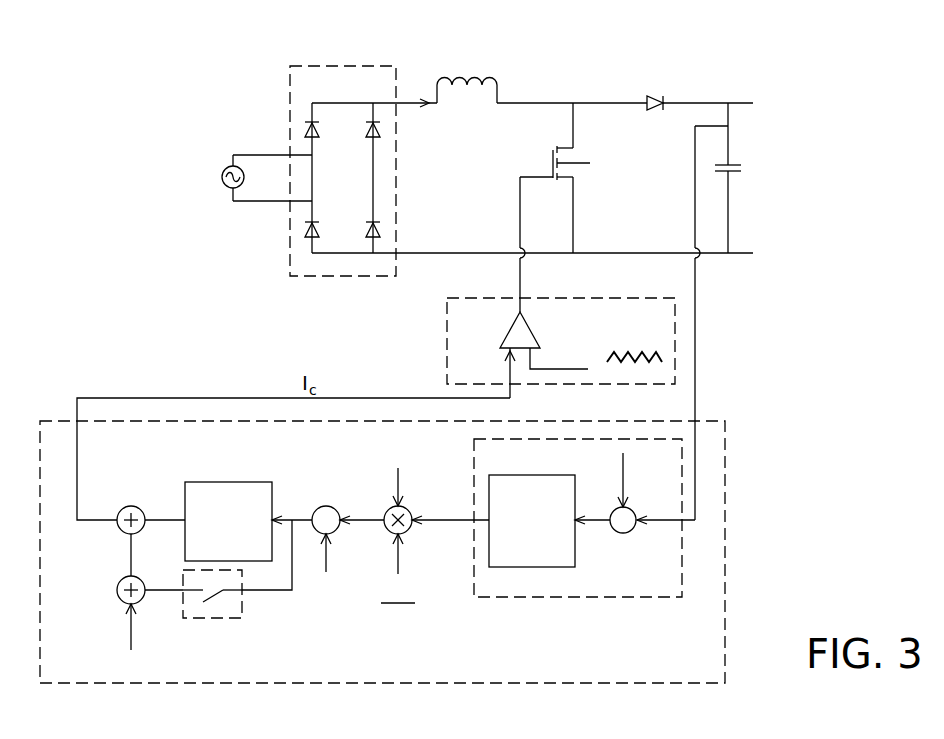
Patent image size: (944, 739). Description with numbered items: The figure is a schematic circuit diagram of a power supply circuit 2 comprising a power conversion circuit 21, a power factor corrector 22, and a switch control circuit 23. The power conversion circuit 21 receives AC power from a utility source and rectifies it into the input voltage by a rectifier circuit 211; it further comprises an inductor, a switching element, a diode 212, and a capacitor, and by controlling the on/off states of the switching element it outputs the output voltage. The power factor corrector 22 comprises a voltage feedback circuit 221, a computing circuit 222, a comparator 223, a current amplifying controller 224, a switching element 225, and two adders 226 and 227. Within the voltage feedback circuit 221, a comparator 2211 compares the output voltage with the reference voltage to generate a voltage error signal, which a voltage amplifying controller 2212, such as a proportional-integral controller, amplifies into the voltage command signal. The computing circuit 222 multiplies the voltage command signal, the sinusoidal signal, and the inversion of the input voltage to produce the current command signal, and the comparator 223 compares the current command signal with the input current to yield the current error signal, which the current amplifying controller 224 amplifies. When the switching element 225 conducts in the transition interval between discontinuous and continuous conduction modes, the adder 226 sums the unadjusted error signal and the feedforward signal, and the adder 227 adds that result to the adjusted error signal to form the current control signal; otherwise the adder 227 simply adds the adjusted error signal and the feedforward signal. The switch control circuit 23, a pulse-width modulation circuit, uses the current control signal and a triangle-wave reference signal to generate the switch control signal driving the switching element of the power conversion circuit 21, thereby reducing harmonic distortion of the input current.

The power supply circuit 2 is at (832, 77).
The power conversion circuit 21 is at (681, 89).
The rectifier circuit 211 is at (335, 66).
The diode 212 is at (655, 94).
The power factor corrector 22 is at (727, 462).
The voltage feedback circuit 221 is at (578, 597).
The comparator 2211 is at (625, 533).
The voltage amplifying controller 2212 is at (532, 475).
The computing circuit 222 is at (408, 508).
The comparator 223 is at (328, 506).
The current amplifying controller 224 is at (230, 482).
The switching element 225 is at (215, 619).
The adder 226 is at (118, 583).
The adder 227 is at (142, 507).
The switch control circuit 23 is at (447, 340).